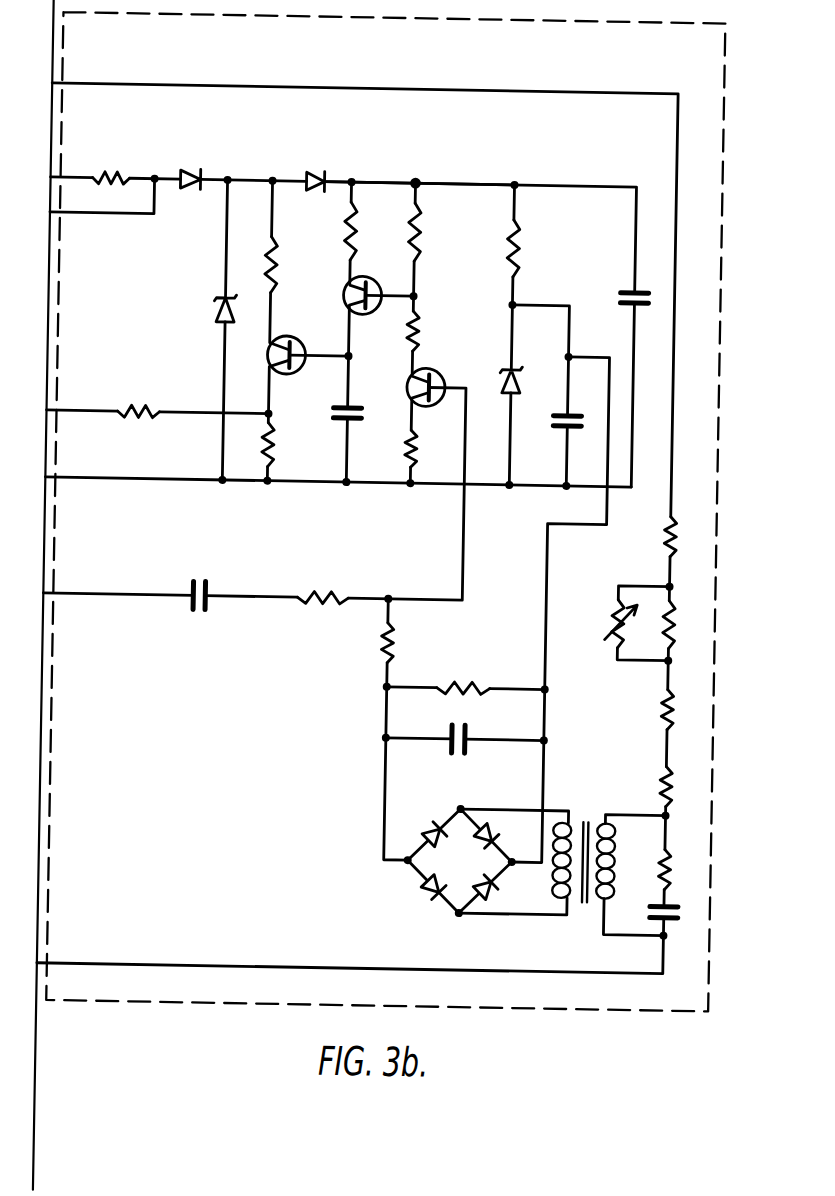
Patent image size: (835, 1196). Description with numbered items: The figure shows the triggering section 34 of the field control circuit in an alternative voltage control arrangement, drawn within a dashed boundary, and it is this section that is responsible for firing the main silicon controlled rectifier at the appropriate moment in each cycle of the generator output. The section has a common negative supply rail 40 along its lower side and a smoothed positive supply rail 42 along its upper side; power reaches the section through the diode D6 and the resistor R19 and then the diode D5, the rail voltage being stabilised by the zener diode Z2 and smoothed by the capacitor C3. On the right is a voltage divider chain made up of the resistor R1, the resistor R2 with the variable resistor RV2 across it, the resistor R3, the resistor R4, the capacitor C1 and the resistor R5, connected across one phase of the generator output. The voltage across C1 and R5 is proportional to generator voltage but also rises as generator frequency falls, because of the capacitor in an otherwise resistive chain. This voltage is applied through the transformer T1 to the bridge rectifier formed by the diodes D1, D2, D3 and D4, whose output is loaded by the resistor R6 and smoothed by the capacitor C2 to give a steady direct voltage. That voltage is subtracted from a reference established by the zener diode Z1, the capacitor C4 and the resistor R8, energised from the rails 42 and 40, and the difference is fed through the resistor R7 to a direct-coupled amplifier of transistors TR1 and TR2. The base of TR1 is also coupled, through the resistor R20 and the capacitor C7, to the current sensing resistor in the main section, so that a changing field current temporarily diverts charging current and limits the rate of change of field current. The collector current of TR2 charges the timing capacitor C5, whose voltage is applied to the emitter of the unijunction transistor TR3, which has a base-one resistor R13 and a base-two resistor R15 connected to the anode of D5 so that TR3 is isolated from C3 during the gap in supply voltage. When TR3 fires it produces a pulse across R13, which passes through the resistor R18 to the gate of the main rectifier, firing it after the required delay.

The triggering section 34 is at (409, 65).
The common negative supply rail 40 is at (267, 483).
The smoothed positive supply rail 42 is at (387, 182).
The resistor R19 is at (112, 162).
The diode D6 is at (192, 163).
The diode D5 is at (315, 165).
The zener diode Z2 is at (209, 314).
The base-2 resistor R15 is at (292, 262).
The unijunction transistor TR3 is at (290, 371).
The transistor TR2 is at (339, 296).
The transistor TR1 is at (441, 373).
The resistor R18 is at (141, 396).
The base-1 resistor R13 is at (288, 445).
The timing capacitor C5 is at (357, 431).
The resistor R8 is at (529, 249).
The zener diode Z1 is at (502, 393).
The capacitor C4 is at (577, 436).
The capacitor C3 is at (622, 282).
The capacitor C7 is at (203, 577).
The resistor R20 is at (323, 583).
The resistor R7 is at (404, 643).
The resistor R6 is at (464, 674).
The capacitor C2 is at (461, 754).
The bridge rectifier diode D1 is at (501, 831).
The bridge rectifier diode D2 is at (500, 891).
The bridge rectifier diode D3 is at (425, 824).
The bridge rectifier diode D4 is at (419, 893).
The transformer T1 is at (584, 846).
The resistor R1 is at (684, 535).
The variable resistor RV2 is at (615, 623).
The resistor R2 is at (682, 625).
The resistor R3 is at (682, 710).
The resistor R4 is at (679, 787).
The resistor R5 is at (678, 868).
The capacitor C1 is at (675, 924).